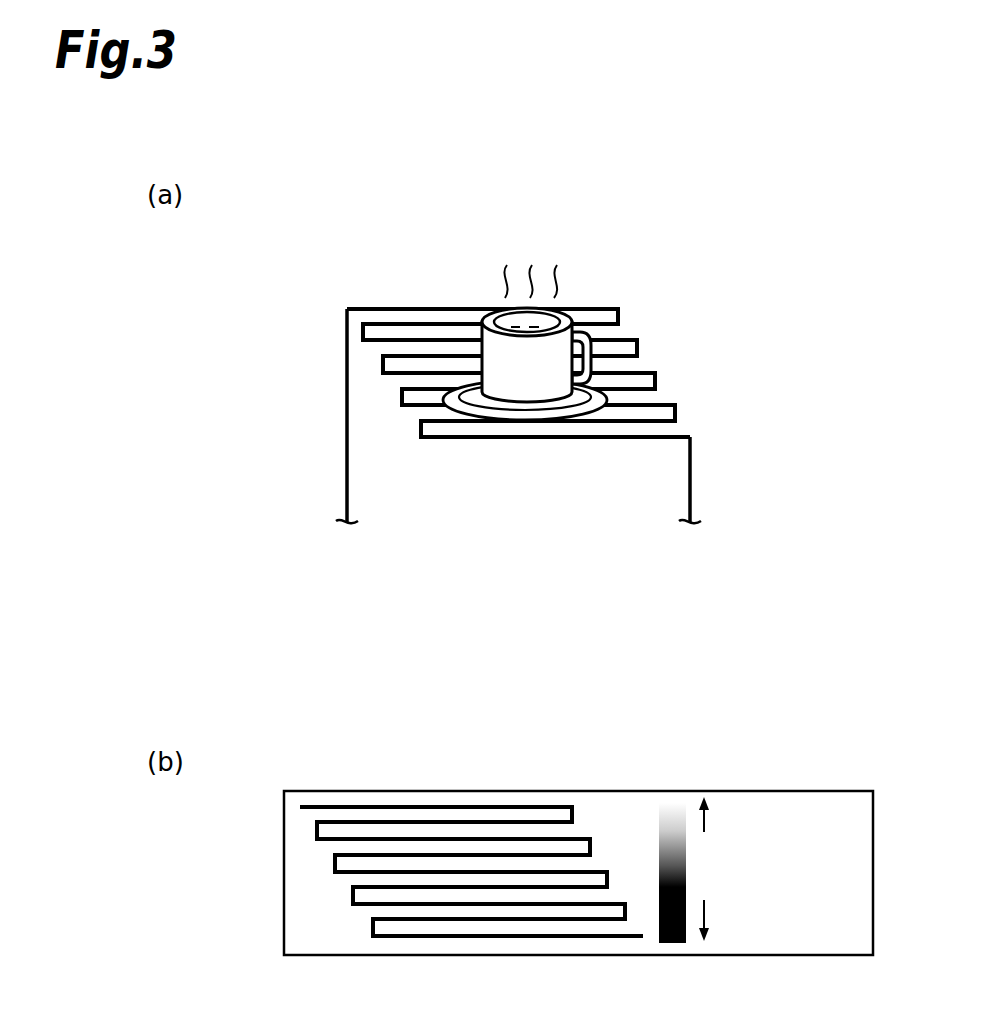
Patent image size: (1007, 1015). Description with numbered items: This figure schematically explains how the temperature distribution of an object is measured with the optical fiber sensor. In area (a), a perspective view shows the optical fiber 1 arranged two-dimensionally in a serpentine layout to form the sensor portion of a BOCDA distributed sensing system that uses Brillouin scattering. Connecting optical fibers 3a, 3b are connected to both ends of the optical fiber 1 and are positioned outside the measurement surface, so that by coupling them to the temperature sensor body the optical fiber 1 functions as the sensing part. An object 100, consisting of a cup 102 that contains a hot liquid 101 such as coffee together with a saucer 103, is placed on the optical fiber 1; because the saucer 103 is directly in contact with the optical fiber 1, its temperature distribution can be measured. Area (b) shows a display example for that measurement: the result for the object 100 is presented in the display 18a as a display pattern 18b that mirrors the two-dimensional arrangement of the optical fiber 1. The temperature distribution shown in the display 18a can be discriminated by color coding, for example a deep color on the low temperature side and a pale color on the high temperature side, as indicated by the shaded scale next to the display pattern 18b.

The optical fiber 1 is at (642, 339).
The connecting optical fiber 3a is at (691, 462).
The connecting optical fiber 3b is at (347, 403).
The object 100 is at (484, 319).
The hot liquid 101 is at (502, 326).
The cup 102 is at (562, 340).
The saucer 103 is at (547, 418).
The display 18a is at (493, 790).
The display pattern 18b is at (577, 812).